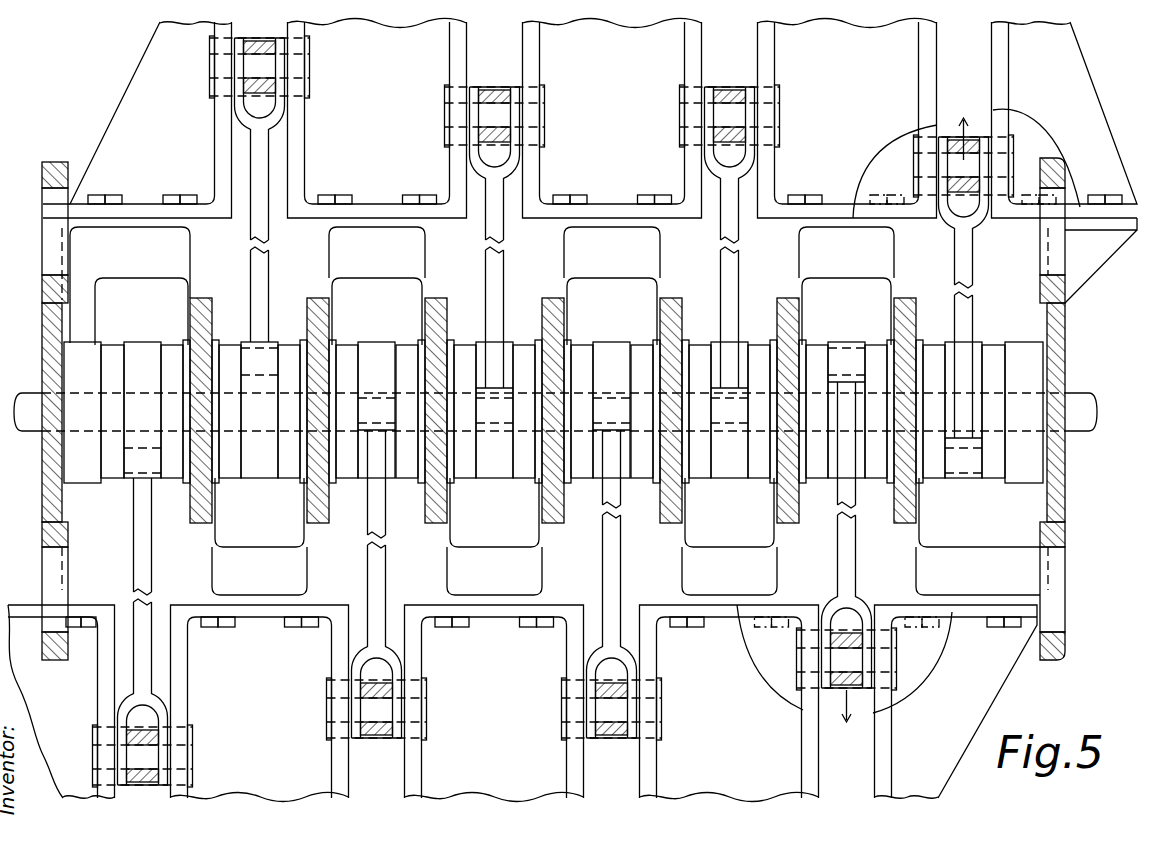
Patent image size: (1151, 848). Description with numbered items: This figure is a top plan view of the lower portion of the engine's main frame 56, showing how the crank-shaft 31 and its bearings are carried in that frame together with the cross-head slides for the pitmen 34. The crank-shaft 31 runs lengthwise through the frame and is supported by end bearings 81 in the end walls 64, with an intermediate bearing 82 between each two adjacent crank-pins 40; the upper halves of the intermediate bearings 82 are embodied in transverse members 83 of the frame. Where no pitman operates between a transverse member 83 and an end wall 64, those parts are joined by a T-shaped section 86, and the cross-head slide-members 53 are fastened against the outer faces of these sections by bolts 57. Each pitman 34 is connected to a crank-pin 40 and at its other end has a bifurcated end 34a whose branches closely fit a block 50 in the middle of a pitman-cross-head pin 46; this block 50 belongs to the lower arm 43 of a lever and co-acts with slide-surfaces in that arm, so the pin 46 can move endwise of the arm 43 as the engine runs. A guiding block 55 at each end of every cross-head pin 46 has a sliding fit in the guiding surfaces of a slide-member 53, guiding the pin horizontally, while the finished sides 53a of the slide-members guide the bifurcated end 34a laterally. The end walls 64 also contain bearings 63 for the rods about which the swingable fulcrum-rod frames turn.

The crank-shaft 31 is at (25, 396).
The pitman 34 is at (268, 270).
The bifurcated end of pitman 34a is at (284, 110).
The crank-pin 40 is at (248, 384).
The lower arm of lever 43 is at (903, 412).
The pitman-cross-head pin 46 is at (292, 97).
The block 50 is at (264, 42).
The cross-head slide-member 53 is at (572, 410).
The finished sides of cross-head slide-members 53a is at (240, 151).
The guiding block 55 is at (209, 54).
The main frame 56 is at (1076, 332).
The bolt 57 is at (118, 198).
The bearing 63 is at (48, 197).
The end wall 64 is at (46, 332).
The end bearing 81 is at (96, 362).
The intermediate bearing 82 is at (218, 486).
The transverse member 83 is at (205, 512).
The T-shaped section 86 is at (555, 411).